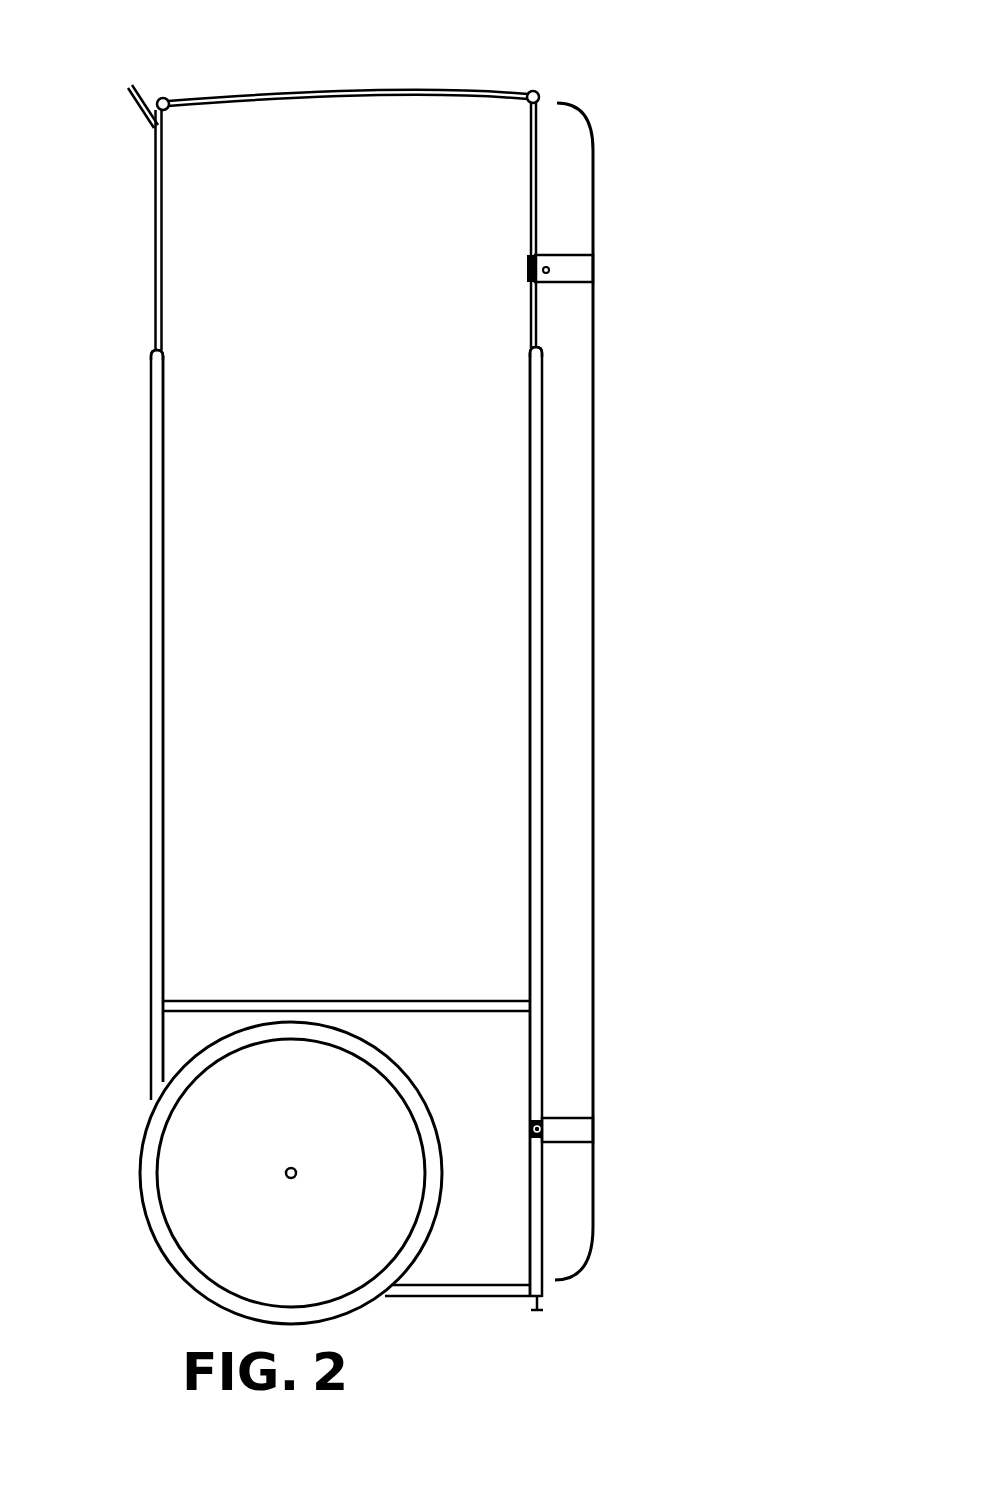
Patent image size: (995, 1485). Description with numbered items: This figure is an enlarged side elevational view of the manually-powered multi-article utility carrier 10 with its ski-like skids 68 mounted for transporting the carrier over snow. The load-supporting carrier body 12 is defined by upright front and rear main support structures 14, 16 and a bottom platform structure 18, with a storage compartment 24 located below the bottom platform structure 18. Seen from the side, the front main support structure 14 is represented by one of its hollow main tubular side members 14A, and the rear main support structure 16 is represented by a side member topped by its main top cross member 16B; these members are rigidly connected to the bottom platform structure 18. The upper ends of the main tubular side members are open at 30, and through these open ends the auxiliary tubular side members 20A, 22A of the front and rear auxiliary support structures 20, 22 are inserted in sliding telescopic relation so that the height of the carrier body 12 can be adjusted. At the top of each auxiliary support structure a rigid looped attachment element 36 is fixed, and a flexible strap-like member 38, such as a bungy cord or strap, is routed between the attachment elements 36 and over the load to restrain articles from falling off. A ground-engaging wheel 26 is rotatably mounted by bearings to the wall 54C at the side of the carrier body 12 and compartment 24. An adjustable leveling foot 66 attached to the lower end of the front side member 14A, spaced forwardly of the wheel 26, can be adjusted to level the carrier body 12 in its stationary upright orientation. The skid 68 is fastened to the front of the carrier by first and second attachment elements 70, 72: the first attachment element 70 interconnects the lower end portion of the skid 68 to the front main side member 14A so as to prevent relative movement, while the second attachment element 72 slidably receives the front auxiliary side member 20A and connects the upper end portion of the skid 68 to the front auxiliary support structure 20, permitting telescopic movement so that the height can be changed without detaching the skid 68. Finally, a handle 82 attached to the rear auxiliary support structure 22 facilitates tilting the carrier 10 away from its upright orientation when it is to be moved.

The utility carrier 10 is at (568, 29).
The carrier body 12 is at (145, 608).
The front main support structure 14 is at (550, 458).
The main tubular side member 14A is at (531, 680).
The rear main support structure 16 is at (145, 761).
The main top cross member 16B is at (165, 553).
The bottom platform structure 18 is at (319, 1000).
The front auxiliary support structure 20 is at (545, 179).
The auxiliary tubular side member 20A is at (530, 215).
The rear auxiliary support structure 22 is at (168, 253).
The auxiliary tubular side member 22A is at (152, 214).
The storage compartment 24 is at (489, 1295).
The ground-engaging wheel 26 is at (152, 1192).
The open upper end 30 is at (163, 348).
The attachment element 36 is at (541, 94).
The flexible strap-like member 38 is at (309, 96).
The wall 54C is at (490, 1080).
The adjustable leveling foot 66 is at (546, 1300).
The ski-like skid 68 is at (596, 786).
The first attachment element 70 is at (567, 1108).
The second attachment element 72 is at (571, 290).
The handle 82 is at (126, 88).